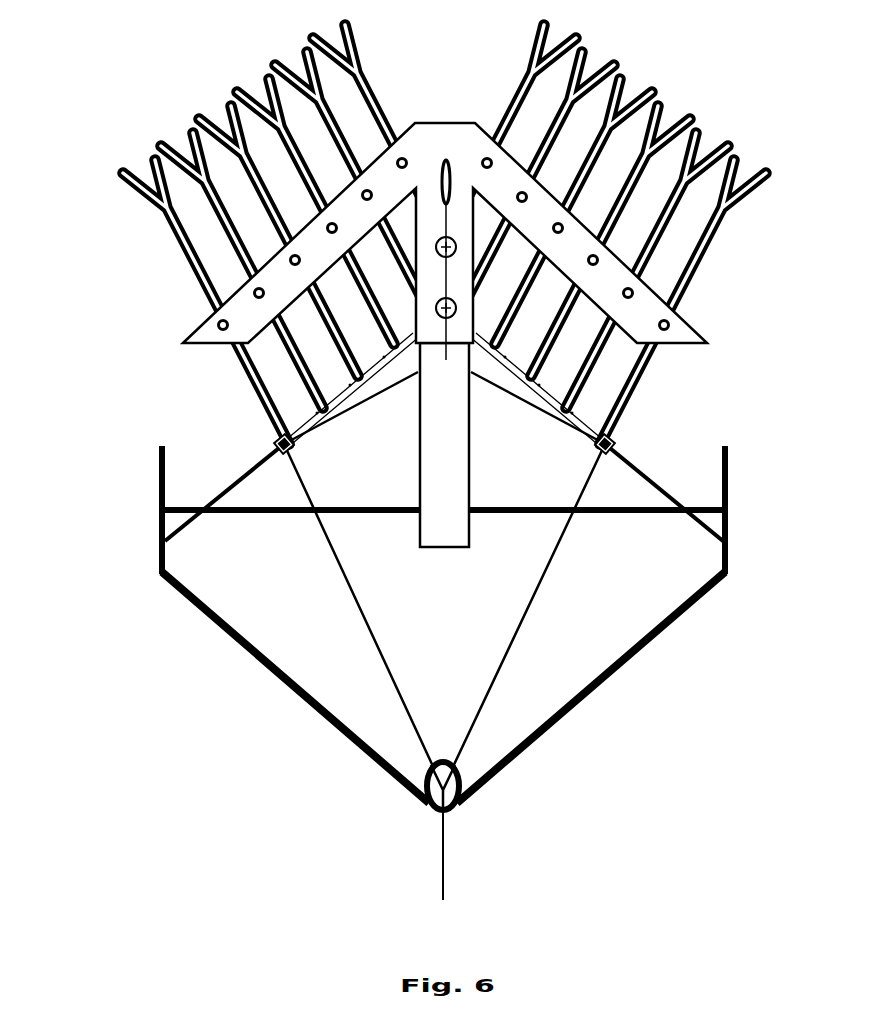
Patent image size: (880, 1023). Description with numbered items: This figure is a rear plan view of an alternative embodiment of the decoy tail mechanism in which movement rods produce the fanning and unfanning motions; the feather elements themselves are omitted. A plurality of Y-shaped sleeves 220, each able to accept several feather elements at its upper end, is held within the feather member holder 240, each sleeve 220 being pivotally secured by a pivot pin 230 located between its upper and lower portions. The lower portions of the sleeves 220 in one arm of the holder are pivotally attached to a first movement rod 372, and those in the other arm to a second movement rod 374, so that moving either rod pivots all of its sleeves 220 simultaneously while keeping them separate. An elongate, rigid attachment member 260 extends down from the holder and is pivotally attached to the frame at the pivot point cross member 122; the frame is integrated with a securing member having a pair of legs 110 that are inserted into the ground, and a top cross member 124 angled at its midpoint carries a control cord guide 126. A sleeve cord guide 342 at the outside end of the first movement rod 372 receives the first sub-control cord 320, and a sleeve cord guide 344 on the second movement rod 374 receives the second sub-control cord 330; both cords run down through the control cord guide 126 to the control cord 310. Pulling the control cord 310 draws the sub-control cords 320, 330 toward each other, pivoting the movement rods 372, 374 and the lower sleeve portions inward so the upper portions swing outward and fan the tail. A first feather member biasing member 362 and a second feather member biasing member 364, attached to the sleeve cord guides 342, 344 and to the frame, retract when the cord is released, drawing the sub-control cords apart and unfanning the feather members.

The leg 110 is at (409, 612).
The pivot point cross member 122 is at (613, 506).
The top cross member 124 is at (305, 703).
The control cord guide 126 is at (468, 786).
The sleeve 220 is at (122, 174).
The pivot pin 230 is at (212, 327).
The feather member holder 240 is at (446, 122).
The attachment member 260 is at (419, 468).
The control cord 310 is at (441, 855).
The first sub-control cord 320 is at (353, 409).
The second sub-control cord 330 is at (506, 397).
The sleeve cord guide 342 is at (278, 439).
The sleeve cord guide 344 is at (598, 447).
The first feather member biasing member 362 is at (245, 472).
The second feather member biasing member 364 is at (620, 450).
The first movement rod 372 is at (327, 393).
The second movement rod 374 is at (585, 425).